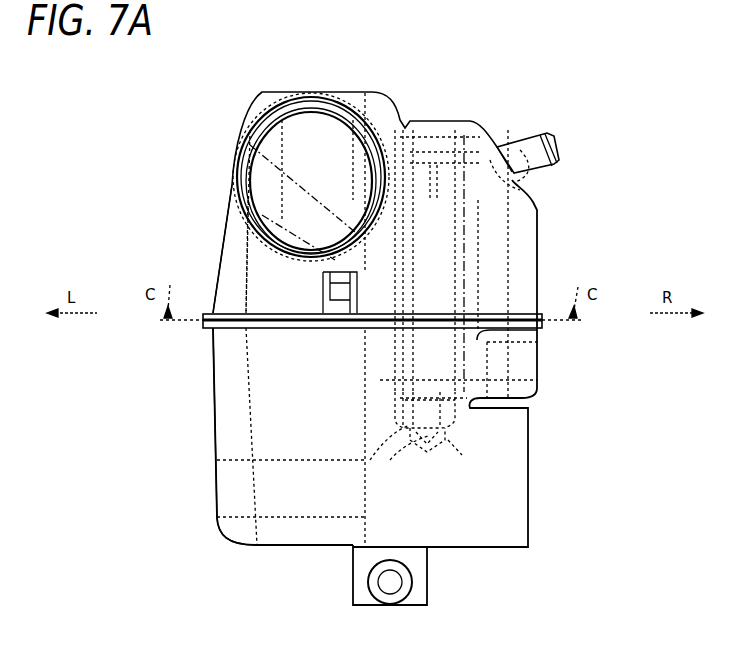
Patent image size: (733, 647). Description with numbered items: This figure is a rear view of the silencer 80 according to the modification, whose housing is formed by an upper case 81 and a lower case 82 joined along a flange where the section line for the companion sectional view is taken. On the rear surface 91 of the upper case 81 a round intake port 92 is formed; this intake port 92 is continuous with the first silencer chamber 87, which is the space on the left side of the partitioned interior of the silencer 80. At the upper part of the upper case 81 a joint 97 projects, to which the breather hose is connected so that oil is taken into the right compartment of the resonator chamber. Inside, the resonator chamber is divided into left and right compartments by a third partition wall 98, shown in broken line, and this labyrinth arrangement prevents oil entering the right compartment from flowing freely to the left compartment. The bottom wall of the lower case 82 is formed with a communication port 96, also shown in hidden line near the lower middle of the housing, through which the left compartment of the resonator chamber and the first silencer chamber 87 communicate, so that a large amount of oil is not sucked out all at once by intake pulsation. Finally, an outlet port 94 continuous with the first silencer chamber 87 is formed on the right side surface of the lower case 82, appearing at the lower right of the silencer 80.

The silencer 80 is at (212, 100).
The upper case 81 is at (210, 230).
The lower case 82 is at (212, 384).
The first silencer chamber 87 is at (322, 188).
The rear surface 91 is at (228, 268).
The intake port 92 is at (314, 104).
The outlet port 94 is at (530, 455).
The communication port 96 is at (452, 450).
The joint 97 is at (533, 135).
The third partition wall 98 is at (476, 270).